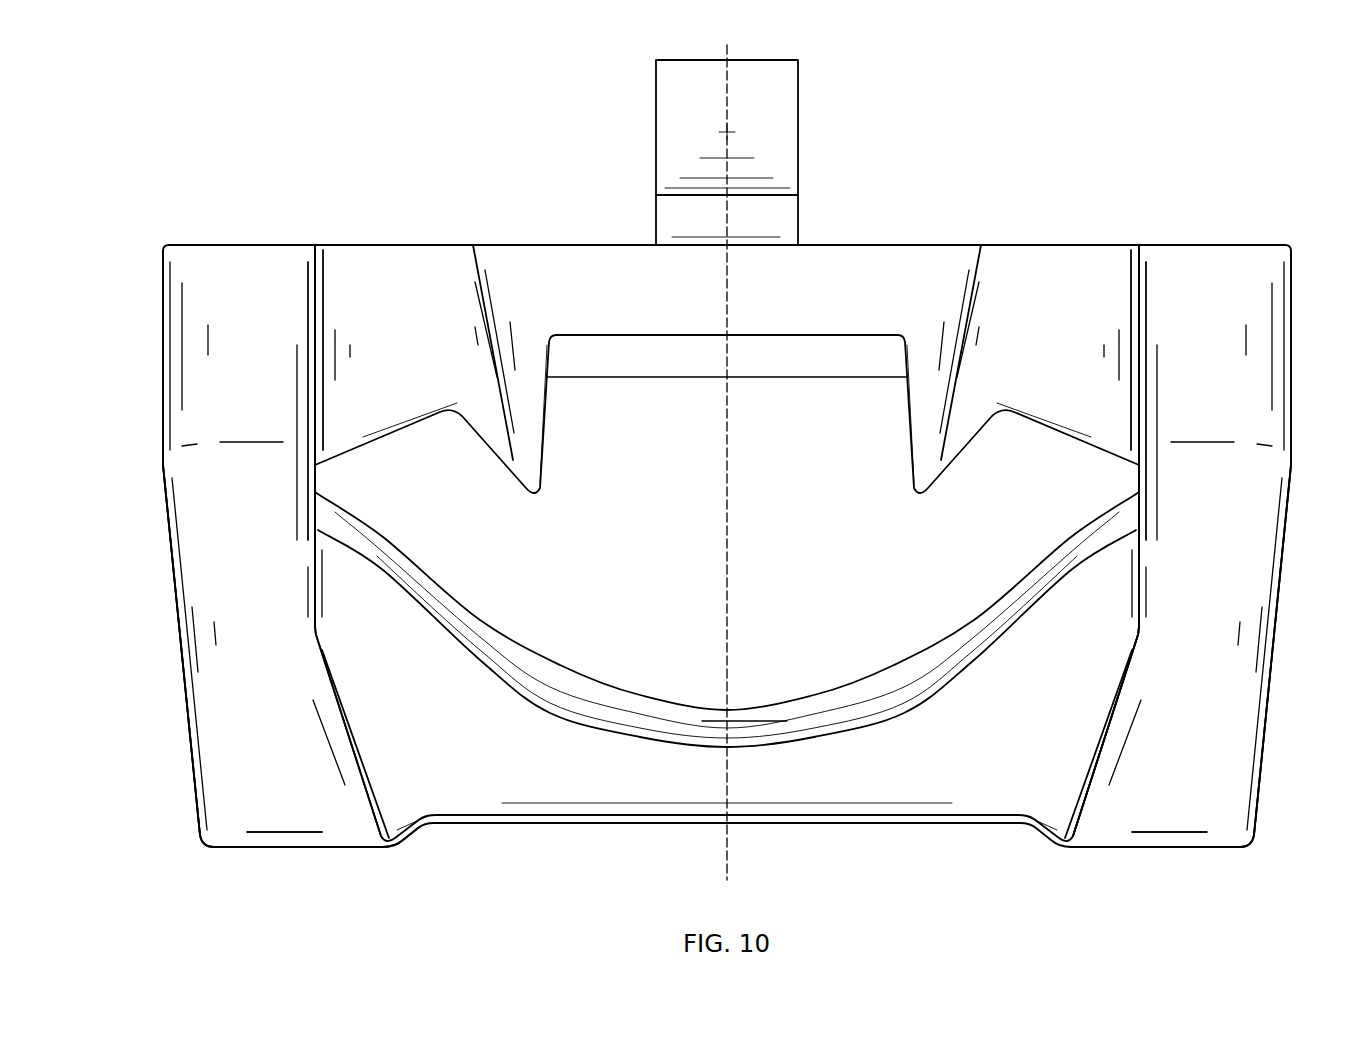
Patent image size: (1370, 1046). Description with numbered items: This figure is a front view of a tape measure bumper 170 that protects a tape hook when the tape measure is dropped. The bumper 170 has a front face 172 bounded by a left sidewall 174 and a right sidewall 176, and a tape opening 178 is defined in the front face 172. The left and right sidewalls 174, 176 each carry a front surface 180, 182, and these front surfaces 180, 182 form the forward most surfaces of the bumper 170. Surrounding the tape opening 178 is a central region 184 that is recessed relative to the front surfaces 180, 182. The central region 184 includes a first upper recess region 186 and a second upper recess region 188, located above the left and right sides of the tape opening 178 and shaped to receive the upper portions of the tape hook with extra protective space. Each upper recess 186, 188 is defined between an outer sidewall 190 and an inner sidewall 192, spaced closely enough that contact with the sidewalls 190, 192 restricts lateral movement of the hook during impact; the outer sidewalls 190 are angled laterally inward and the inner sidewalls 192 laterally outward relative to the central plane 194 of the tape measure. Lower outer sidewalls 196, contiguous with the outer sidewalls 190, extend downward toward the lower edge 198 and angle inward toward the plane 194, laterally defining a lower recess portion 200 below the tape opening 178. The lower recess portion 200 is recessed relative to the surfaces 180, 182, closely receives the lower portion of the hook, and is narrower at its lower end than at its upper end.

The tape measure bumper 170 is at (1258, 150).
The front face 172 is at (606, 276).
The left sidewall 174 is at (215, 562).
The right sidewall 176 is at (1230, 650).
The tape opening 178 is at (600, 618).
The front surface 180 is at (248, 790).
The front surface 182 is at (1190, 794).
The central region 184 is at (978, 740).
The first upper recess region 186 is at (388, 310).
The second upper recess region 188 is at (1058, 290).
The outer sidewall 190 is at (318, 382).
The inner sidewall 192 is at (495, 390).
The central plane 194 is at (730, 110).
The lower outer sidewall 196 is at (362, 764).
The lower edge 198 is at (282, 850).
The lower recess portion 200 is at (660, 777).